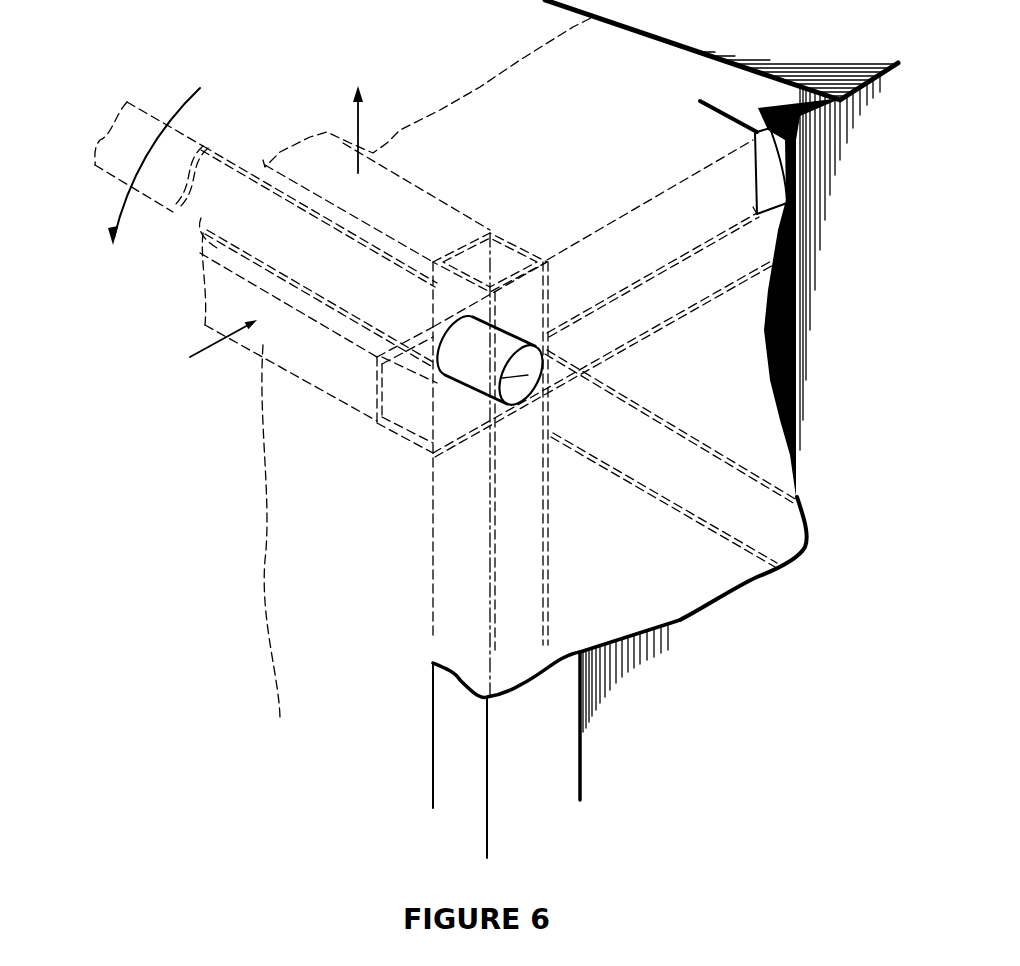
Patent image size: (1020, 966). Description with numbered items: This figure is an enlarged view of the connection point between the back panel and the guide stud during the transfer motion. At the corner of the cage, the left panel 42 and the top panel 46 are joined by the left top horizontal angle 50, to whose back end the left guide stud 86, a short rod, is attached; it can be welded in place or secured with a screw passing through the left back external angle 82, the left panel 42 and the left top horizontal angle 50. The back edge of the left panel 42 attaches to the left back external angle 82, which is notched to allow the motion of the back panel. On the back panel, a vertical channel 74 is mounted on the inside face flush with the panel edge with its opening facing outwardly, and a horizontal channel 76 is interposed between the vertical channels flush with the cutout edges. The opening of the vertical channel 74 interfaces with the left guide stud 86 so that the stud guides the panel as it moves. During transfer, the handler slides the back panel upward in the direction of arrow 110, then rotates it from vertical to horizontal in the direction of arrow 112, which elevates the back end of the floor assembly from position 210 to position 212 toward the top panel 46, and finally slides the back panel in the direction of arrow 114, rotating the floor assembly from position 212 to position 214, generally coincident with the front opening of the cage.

The left panel 42 is at (848, 272).
The top panel 46 is at (733, 37).
The top horizontal angle 50 is at (714, 115).
The vertical channel 74 is at (510, 244).
The horizontal channel 76 is at (418, 187).
The back external angle 82 is at (570, 753).
The left guide stud 86 is at (528, 375).
The arrow 110 is at (362, 110).
The arrow 112 is at (118, 212).
The arrow 114 is at (192, 358).
The position 210 is at (549, 549).
The position 212 is at (682, 430).
The position 214 is at (713, 292).